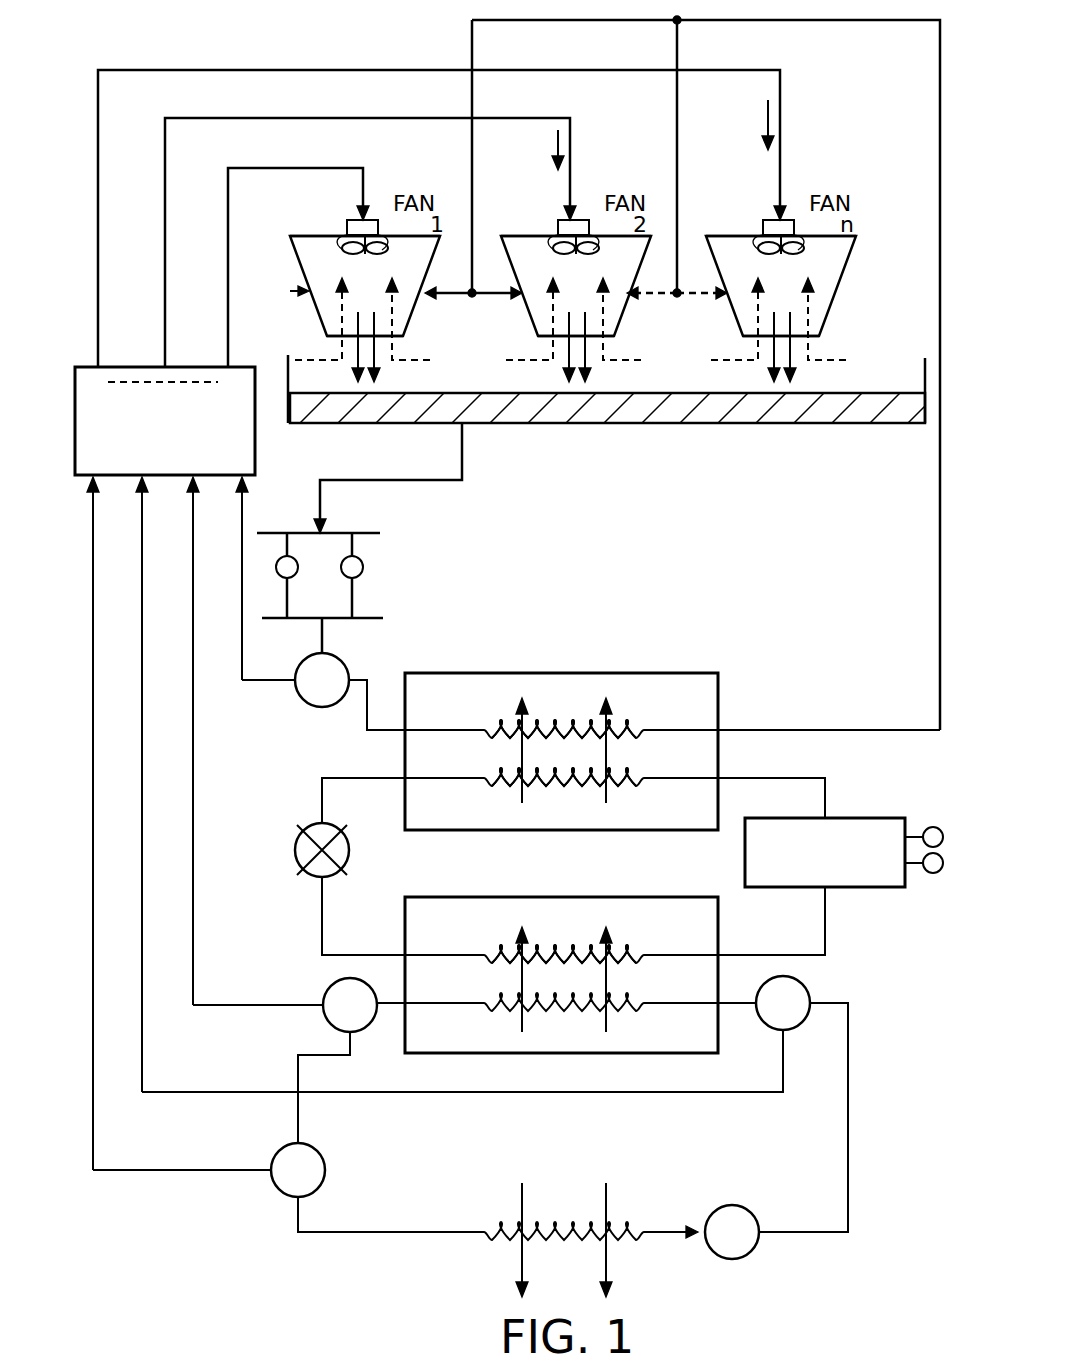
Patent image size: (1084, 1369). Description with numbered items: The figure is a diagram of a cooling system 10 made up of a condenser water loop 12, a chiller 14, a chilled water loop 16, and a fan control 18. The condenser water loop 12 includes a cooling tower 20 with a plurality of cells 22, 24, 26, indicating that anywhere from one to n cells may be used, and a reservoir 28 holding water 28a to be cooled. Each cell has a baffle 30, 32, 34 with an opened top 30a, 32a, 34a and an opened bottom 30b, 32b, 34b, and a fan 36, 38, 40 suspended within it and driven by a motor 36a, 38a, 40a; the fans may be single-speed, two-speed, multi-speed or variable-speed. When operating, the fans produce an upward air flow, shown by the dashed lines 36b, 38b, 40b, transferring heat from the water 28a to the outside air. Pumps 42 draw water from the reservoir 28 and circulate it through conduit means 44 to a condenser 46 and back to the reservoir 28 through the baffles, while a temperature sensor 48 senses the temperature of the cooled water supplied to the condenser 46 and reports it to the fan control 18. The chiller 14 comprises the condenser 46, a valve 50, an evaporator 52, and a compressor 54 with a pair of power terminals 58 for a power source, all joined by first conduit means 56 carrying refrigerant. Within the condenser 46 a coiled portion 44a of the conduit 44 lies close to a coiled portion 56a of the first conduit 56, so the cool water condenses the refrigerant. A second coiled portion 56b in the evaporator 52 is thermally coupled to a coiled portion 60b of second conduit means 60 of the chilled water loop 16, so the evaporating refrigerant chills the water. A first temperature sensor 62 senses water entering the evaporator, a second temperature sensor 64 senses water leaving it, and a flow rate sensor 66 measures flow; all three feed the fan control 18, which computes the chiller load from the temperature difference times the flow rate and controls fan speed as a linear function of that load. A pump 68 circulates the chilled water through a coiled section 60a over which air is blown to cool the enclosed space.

The cooling system 10 is at (800, 76).
The condenser water loop 12 is at (560, 542).
The chiller 14 is at (588, 866).
The chilled water loop 16 is at (580, 1149).
The fan control 18 is at (255, 448).
The cooling tower 20 is at (378, 108).
The cell 22 is at (285, 290).
The cell 24 is at (547, 150).
The cell 26 is at (755, 125).
The reservoir 28 is at (657, 423).
The water 28a is at (757, 410).
The baffle 30 is at (418, 310).
The opened top 30a is at (300, 235).
The opened bottom 30b is at (400, 338).
The baffle 32 is at (592, 286).
The opened top 32a is at (553, 224).
The opened bottom 32b is at (608, 349).
The baffle 34 is at (797, 286).
The opened top 34a is at (758, 224).
The opened bottom 34b is at (813, 349).
The fan 36 is at (343, 244).
The motor 36a is at (360, 218).
The upward air flow 36b is at (346, 364).
The fan 38 is at (552, 223).
The motor 38a is at (547, 203).
The upward air flow 38b is at (591, 335).
The fan 40 is at (757, 223).
The motor 40a is at (752, 203).
The upward air flow 40b is at (796, 335).
The pumps 42 is at (295, 574).
The conduit means 44 is at (820, 730).
The coiled portion 44a is at (640, 726).
The condenser 46 is at (722, 688).
The temperature sensor 48 is at (340, 662).
The valve 50 is at (349, 855).
The evaporator 52 is at (722, 922).
The compressor 54 is at (877, 889).
The first conduit means 56 is at (826, 797).
The coiled portion 56a is at (634, 788).
The second coiled portion 56b is at (488, 968).
The power terminals 58 is at (938, 827).
The second conduit means 60 is at (850, 1047).
The coiled section 60a is at (615, 1243).
The coiled portion 60b is at (630, 1013).
The first temperature sensor 62 is at (800, 986).
The second temperature sensor 64 is at (327, 1020).
The flow rate sensor 66 is at (280, 1188).
The pump 68 is at (752, 1215).